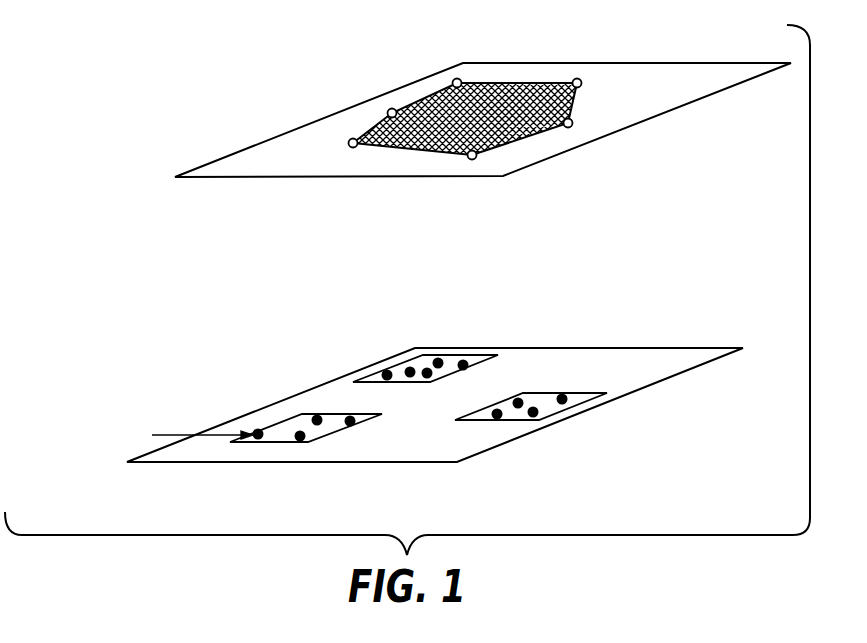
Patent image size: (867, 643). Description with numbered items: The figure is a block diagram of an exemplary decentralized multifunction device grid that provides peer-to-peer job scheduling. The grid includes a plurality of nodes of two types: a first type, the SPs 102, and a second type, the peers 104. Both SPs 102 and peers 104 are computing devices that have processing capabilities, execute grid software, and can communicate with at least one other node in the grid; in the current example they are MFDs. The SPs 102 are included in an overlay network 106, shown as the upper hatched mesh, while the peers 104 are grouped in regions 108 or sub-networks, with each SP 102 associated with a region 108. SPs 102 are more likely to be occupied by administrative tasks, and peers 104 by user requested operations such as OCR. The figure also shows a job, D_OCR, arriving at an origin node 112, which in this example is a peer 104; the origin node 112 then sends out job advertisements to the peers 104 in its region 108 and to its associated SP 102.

The super peer (SP) 102 is at (577, 79).
The peer 104 is at (323, 427).
The overlay network 106 is at (435, 110).
The region 108 is at (273, 443).
The origin node 112 is at (256, 428).